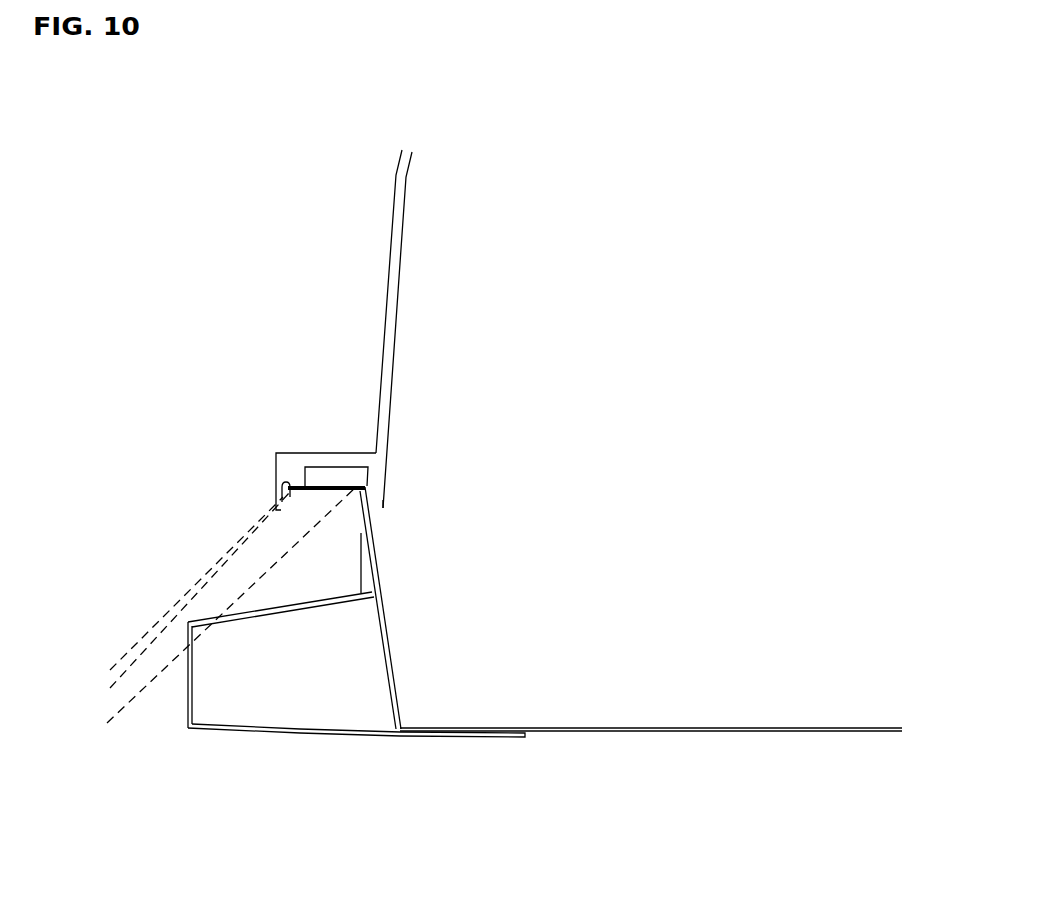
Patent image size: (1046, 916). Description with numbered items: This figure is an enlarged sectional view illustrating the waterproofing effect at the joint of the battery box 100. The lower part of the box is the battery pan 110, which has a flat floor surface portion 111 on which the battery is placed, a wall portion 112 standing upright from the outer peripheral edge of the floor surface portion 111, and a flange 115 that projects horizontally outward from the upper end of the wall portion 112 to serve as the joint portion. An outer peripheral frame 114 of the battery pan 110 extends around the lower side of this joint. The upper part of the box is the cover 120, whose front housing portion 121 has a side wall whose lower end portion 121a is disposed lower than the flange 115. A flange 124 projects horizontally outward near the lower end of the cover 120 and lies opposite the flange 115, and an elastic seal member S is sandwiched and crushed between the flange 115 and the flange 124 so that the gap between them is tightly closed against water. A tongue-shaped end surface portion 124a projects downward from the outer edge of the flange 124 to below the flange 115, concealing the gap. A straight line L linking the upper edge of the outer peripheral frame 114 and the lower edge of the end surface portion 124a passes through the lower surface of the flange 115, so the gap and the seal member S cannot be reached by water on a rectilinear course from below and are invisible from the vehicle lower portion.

The battery box 100 is at (221, 203).
The battery pan 110 is at (723, 624).
The floor surface portion 111 is at (742, 731).
The wall portion 112 is at (383, 632).
The outer peripheral frame 114 is at (242, 729).
The flange 115 is at (318, 488).
The cover 120 is at (721, 432).
The front housing portion 121 is at (387, 269).
The lower end portion 121a is at (380, 509).
The flange 124 is at (311, 453).
The end surface portion 124a is at (277, 495).
The seal member S is at (346, 475).
The straight line L is at (219, 583).